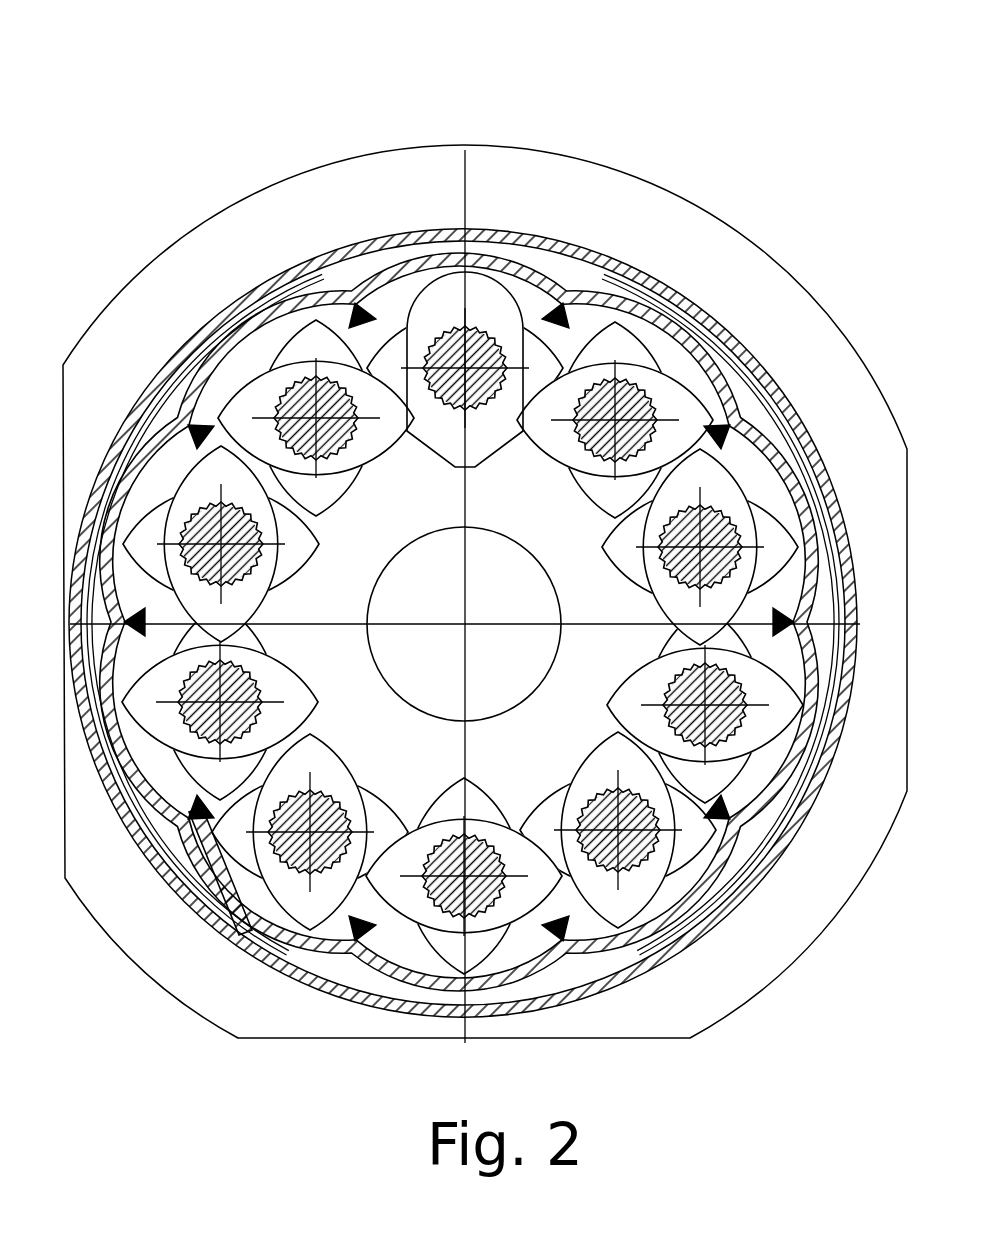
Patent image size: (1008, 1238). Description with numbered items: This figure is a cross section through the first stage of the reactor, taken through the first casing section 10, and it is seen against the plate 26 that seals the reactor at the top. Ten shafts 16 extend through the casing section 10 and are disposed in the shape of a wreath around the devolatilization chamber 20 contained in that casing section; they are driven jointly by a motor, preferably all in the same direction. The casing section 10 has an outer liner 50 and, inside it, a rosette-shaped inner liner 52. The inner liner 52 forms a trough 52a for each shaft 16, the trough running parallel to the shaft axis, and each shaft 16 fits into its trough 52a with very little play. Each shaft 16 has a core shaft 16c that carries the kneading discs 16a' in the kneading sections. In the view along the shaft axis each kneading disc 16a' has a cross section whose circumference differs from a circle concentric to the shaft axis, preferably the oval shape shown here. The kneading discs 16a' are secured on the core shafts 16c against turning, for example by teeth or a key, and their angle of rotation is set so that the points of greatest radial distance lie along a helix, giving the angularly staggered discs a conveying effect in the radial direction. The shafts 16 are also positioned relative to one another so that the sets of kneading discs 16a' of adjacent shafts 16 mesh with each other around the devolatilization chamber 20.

The casing section 10 is at (157, 372).
The plate 26 is at (260, 223).
The outer liner 50 is at (778, 402).
The inner liner 52 is at (768, 793).
The trough 52a is at (242, 932).
The devolatilization chamber 20 is at (533, 500).
The shaft 16 is at (471, 489).
The kneading disc 16a' is at (471, 511).
The core shaft 16c is at (330, 380).